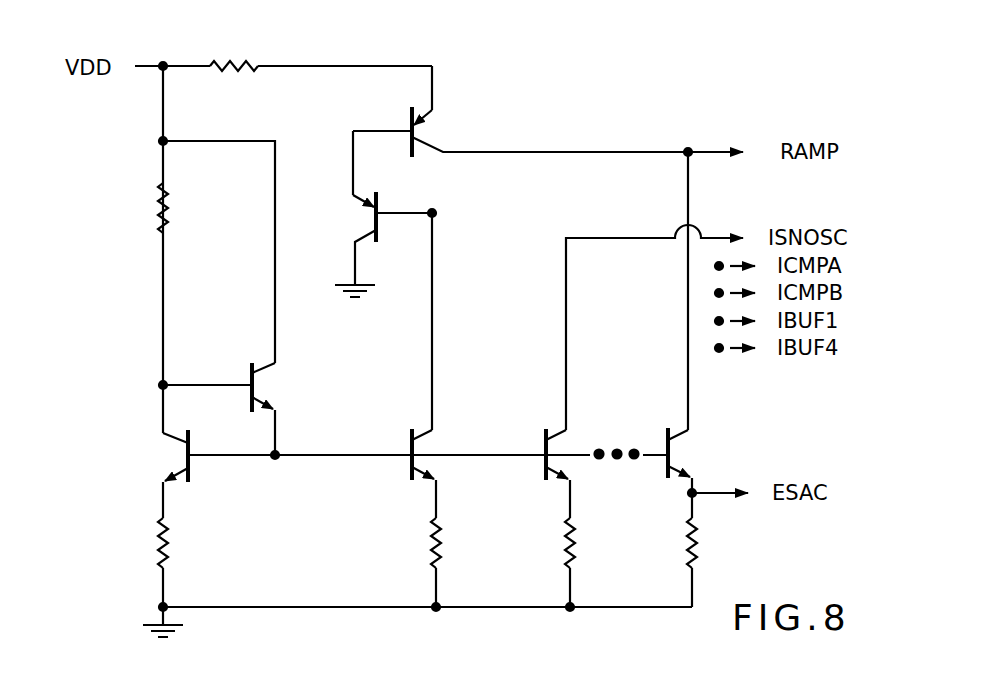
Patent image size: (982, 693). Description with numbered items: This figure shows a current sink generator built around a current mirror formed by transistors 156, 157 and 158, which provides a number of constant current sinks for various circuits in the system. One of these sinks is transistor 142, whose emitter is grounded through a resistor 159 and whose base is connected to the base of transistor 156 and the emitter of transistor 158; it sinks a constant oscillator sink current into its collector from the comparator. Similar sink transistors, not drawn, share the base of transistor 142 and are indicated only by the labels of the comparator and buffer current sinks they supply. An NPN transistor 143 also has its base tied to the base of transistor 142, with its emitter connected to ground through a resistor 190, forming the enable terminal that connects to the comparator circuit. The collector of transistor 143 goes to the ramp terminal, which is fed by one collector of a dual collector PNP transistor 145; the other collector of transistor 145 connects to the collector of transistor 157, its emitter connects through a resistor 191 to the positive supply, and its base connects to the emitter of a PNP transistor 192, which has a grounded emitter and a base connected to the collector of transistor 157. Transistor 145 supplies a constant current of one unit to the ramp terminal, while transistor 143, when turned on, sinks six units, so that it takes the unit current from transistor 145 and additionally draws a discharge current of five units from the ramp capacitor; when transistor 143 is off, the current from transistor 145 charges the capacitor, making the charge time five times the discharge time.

The resistor 191 is at (233, 62).
The dual collector PNP transistor 145 is at (428, 132).
The PNP transistor 192 is at (355, 228).
The transistor 158 is at (257, 390).
The transistor 156 is at (178, 455).
The transistor 157 is at (427, 460).
The transistor 142 is at (560, 445).
The NPN transistor 143 is at (682, 447).
The resistor 159 is at (578, 545).
The resistor 190 is at (700, 533).